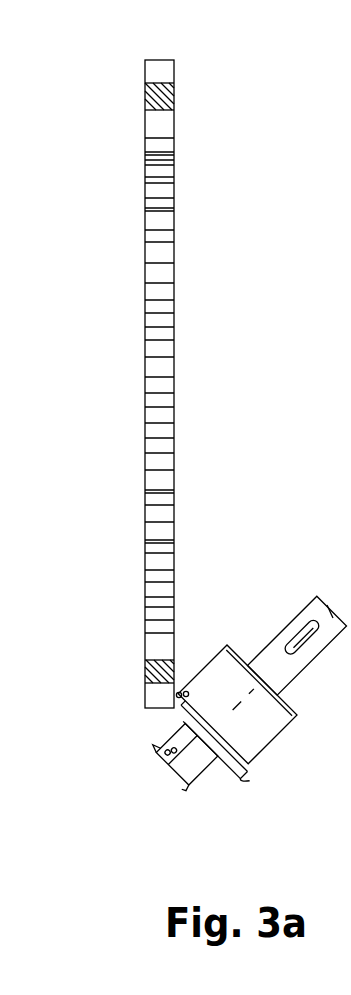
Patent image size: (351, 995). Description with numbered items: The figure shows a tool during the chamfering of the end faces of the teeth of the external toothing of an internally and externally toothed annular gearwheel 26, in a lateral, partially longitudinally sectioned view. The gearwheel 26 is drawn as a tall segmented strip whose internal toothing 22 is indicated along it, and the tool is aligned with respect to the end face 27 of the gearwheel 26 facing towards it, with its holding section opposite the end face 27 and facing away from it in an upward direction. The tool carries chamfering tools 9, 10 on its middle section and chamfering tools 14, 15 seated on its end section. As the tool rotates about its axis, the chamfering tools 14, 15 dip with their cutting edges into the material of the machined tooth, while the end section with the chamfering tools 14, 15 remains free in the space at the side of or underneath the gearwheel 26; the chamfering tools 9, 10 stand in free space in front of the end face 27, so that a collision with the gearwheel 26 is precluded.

The end face 27 is at (184, 218).
The gearwheel 26 is at (145, 317).
The internal toothing 22 is at (146, 457).
The chamfering tool 10 is at (247, 780).
The chamfering tool 9 is at (177, 697).
The chamfering tool 14 is at (157, 753).
The chamfering tool 15 is at (188, 786).